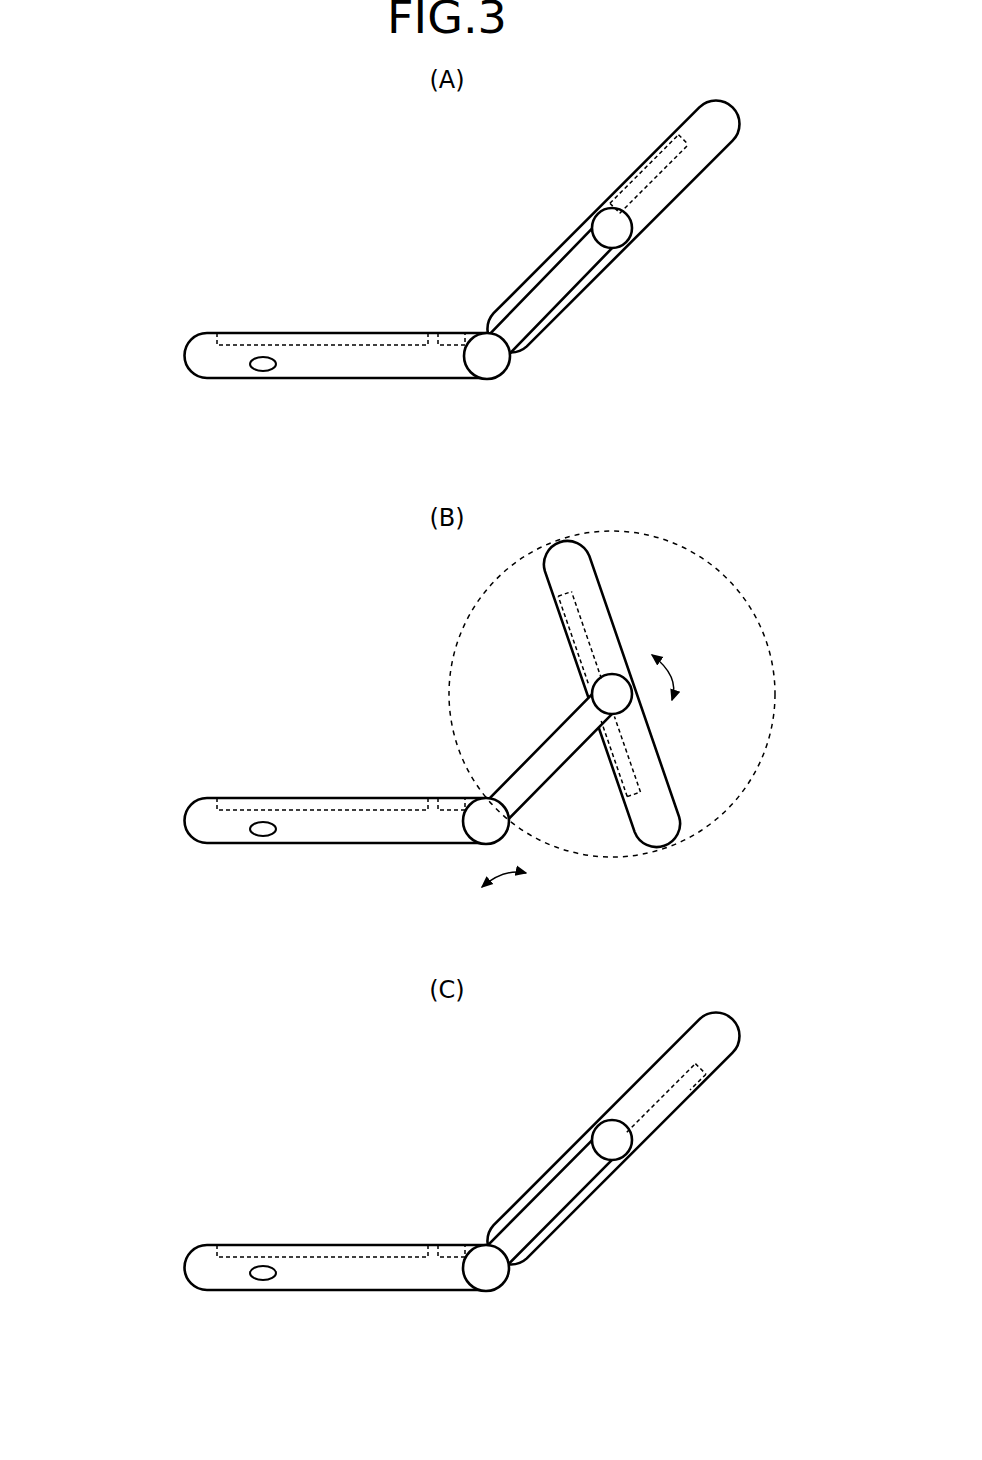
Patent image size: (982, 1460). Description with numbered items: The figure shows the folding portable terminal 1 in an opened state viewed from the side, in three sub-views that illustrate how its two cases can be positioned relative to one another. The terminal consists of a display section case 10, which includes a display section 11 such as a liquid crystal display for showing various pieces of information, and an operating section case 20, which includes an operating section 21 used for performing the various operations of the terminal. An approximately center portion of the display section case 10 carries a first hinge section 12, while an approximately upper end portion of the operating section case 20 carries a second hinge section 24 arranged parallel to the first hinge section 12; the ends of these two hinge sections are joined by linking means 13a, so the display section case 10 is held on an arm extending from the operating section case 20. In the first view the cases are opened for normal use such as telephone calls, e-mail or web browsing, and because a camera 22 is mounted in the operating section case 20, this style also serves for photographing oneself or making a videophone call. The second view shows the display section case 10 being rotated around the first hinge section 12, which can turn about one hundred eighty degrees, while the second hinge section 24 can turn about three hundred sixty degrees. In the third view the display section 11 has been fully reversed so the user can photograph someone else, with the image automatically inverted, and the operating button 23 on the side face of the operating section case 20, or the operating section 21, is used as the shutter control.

The folding portable terminal 1 is at (465, 210).
The display section case 10 is at (701, 166).
The display section 11 is at (660, 153).
The first hinge section 12 is at (607, 224).
The linking means 13a is at (566, 298).
The operating section case 20 is at (202, 356).
The operating section 21 is at (330, 333).
The camera 22 is at (452, 333).
The operating button 23 is at (263, 366).
The second hinge section 24 is at (484, 362).